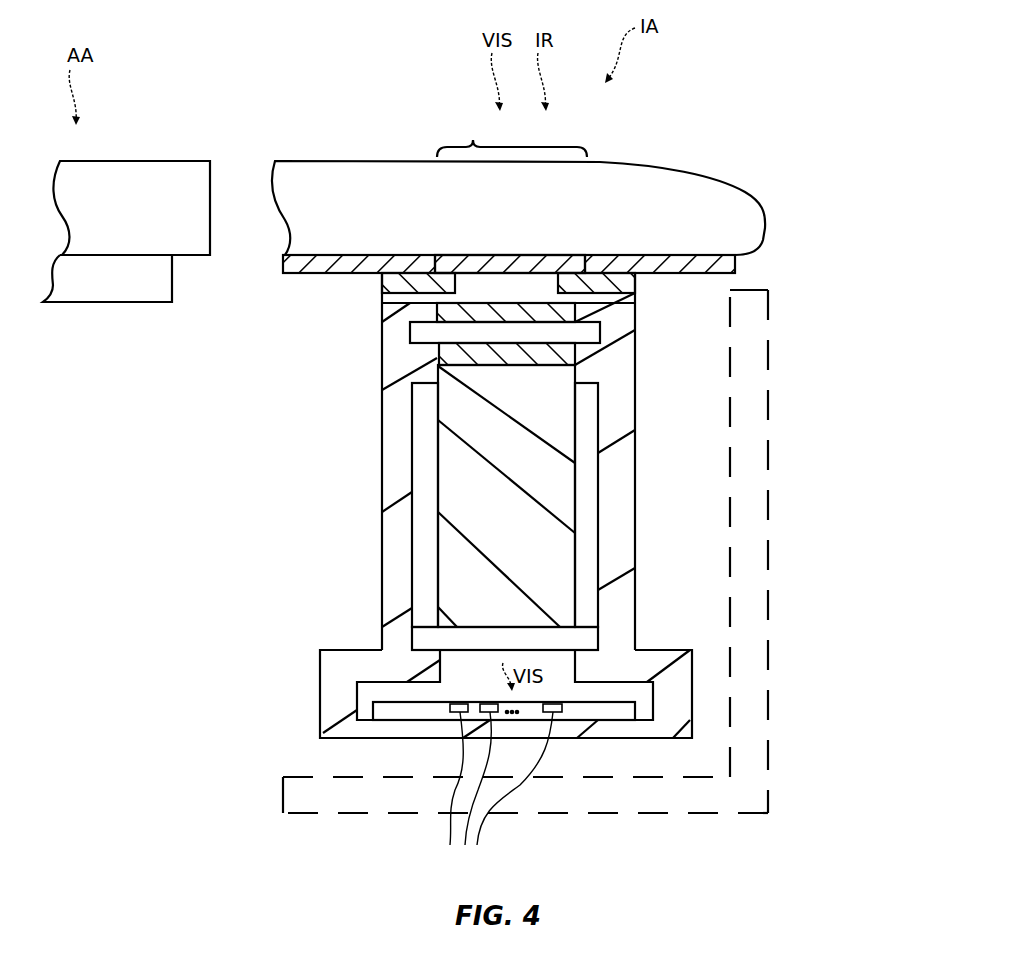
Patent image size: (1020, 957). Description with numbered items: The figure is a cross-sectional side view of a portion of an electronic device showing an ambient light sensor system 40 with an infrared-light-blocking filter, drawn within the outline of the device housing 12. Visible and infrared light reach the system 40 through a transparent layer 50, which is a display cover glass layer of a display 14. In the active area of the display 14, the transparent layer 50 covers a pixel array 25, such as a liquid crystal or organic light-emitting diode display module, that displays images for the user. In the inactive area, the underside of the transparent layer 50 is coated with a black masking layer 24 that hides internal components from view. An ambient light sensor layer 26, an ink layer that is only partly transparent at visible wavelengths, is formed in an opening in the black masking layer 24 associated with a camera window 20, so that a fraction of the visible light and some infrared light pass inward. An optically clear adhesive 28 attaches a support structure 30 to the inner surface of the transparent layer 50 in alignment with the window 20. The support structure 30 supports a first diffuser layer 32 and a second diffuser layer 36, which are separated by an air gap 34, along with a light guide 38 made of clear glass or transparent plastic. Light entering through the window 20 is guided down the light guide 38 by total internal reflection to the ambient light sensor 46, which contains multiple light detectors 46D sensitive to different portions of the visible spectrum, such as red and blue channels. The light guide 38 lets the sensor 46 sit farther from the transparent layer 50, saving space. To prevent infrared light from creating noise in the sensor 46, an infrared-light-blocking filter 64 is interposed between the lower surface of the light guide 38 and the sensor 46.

The housing 12 is at (768, 360).
The display 14 is at (139, 125).
The camera window 20 is at (512, 137).
The black masking layer 24 is at (327, 266).
The pixel array 25 is at (108, 293).
The ambient light sensor layer 26 is at (490, 262).
The optically clear adhesive 28 is at (382, 294).
The support structure 30 is at (386, 418).
The diffuser layer 32 is at (488, 315).
The air gap 34 is at (413, 333).
The diffuser layer 36 is at (436, 354).
The light guide 38 is at (456, 475).
The ambient light sensor system 40 is at (426, 507).
The ambient light sensor 46 is at (373, 712).
The light detectors 46D is at (501, 793).
The transparent layer 50 is at (168, 170).
The infrared-light-blocking filter 64 is at (414, 633).